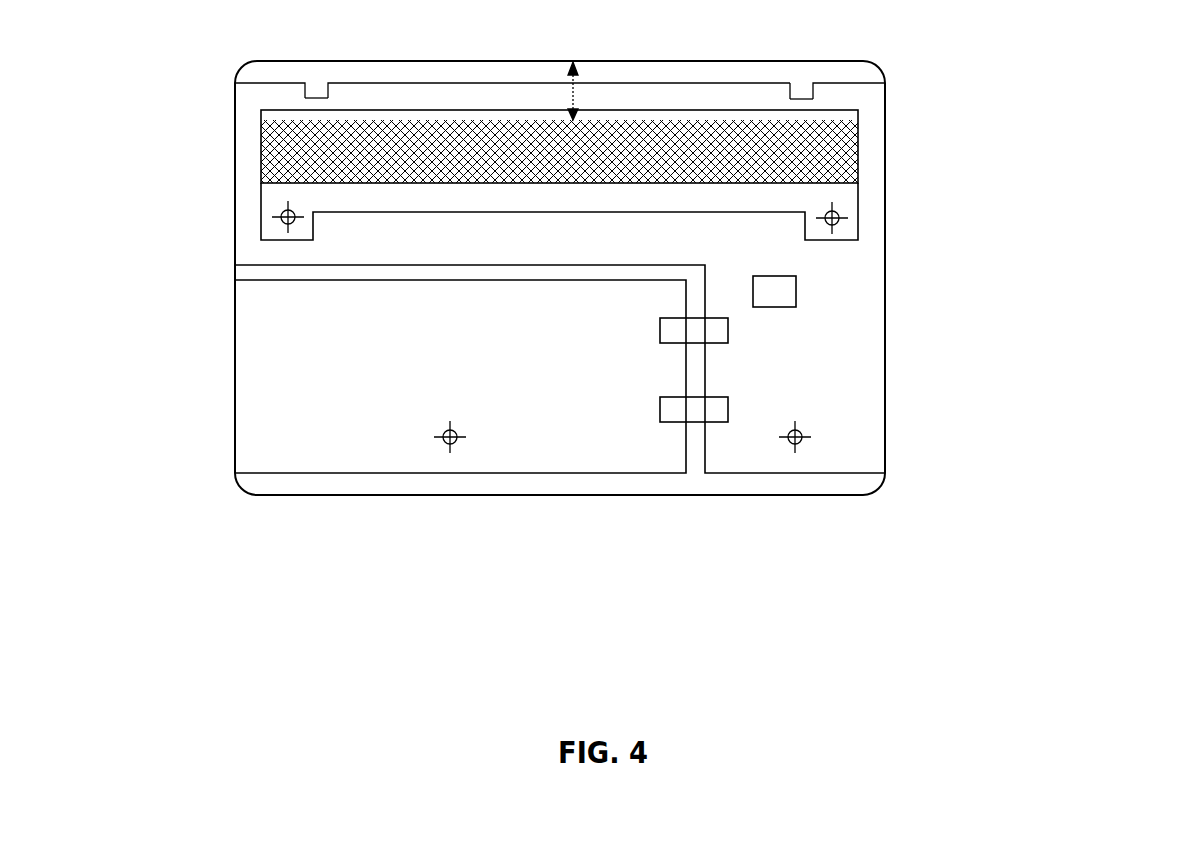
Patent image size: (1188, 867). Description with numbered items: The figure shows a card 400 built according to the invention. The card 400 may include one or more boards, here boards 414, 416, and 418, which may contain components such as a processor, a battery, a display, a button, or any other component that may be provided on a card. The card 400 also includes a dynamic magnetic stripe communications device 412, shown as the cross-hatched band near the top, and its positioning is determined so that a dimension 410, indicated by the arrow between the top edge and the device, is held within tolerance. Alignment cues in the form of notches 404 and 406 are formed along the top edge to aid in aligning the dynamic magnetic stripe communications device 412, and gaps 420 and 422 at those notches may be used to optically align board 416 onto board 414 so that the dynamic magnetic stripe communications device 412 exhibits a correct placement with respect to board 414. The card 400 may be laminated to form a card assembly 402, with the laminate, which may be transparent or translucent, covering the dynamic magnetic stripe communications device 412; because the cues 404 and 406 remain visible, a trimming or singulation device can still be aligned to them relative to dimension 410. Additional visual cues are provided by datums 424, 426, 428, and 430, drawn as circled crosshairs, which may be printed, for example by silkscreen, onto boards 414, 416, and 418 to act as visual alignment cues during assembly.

The card 400 is at (1135, 336).
The card assembly 402 is at (505, 60).
The notch 404 is at (312, 90).
The notch 406 is at (797, 90).
The dimension 410 is at (576, 80).
The dynamic magnetic stripe communications device 412 is at (557, 184).
The board 414 is at (243, 247).
The board 416 is at (525, 113).
The board 418 is at (243, 354).
The gap 420 is at (803, 101).
The gap 422 is at (322, 103).
The datum 424 is at (296, 212).
The datum 426 is at (457, 430).
The datum 428 is at (802, 431).
The datum 430 is at (826, 212).